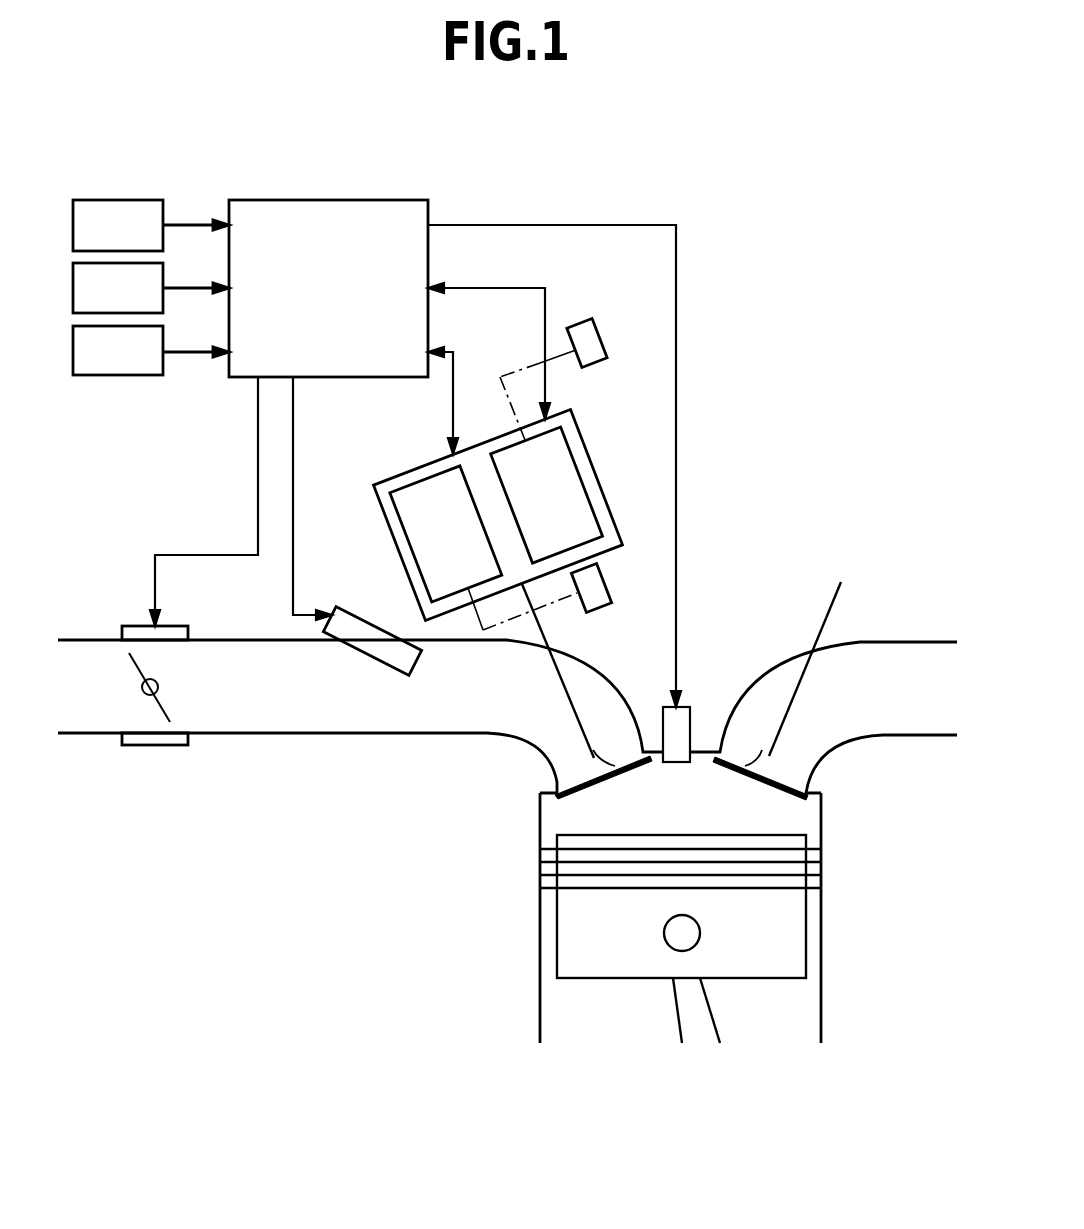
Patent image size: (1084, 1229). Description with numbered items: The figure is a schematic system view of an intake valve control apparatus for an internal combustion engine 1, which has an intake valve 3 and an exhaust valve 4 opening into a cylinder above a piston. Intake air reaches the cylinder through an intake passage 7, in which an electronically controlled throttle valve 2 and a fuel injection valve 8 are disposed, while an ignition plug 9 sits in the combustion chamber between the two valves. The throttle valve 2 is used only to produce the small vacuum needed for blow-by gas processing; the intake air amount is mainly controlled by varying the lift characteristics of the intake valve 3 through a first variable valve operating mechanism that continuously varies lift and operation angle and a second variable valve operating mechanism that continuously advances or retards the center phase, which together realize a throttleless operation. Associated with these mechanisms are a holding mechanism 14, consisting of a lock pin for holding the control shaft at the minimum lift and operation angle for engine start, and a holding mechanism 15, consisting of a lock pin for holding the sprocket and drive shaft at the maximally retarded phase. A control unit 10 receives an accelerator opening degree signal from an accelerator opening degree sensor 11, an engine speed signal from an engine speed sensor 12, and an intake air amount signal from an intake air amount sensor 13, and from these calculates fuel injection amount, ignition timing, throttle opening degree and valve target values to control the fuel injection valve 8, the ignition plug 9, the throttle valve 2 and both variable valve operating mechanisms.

The internal combustion engine 1 is at (505, 949).
The electronically controlled throttle valve 2 is at (138, 672).
The intake valve 3 is at (568, 692).
The exhaust valve 4 is at (767, 740).
The intake passage 7 is at (458, 718).
The fuel injection valve 8 is at (390, 653).
The ignition plug 9 is at (682, 713).
The control unit 10 is at (328, 288).
The accelerator opening degree sensor 11 is at (151, 225).
The engine speed sensor 12 is at (151, 288).
The intake air amount sensor 13 is at (151, 350).
The holding mechanism 14 is at (593, 592).
The holding mechanism 15 is at (590, 343).